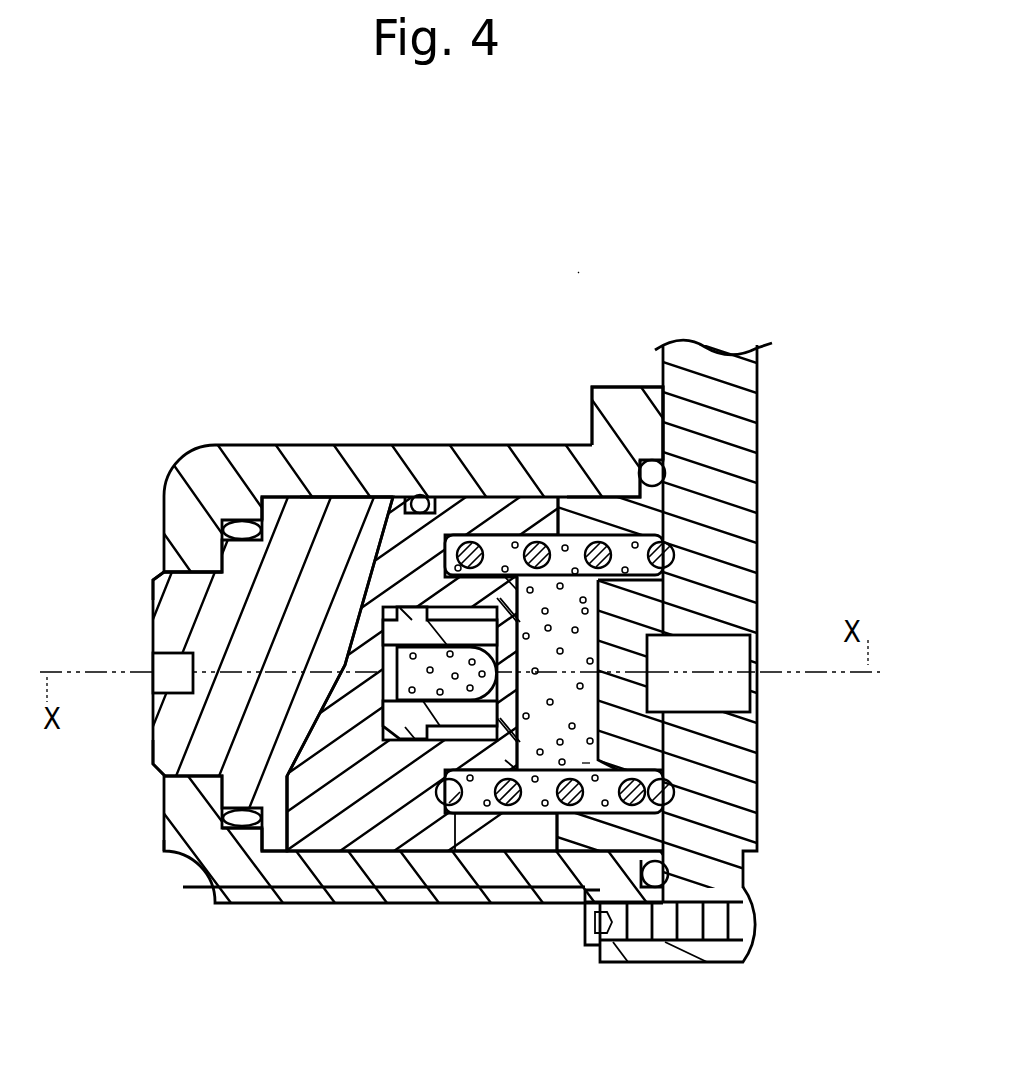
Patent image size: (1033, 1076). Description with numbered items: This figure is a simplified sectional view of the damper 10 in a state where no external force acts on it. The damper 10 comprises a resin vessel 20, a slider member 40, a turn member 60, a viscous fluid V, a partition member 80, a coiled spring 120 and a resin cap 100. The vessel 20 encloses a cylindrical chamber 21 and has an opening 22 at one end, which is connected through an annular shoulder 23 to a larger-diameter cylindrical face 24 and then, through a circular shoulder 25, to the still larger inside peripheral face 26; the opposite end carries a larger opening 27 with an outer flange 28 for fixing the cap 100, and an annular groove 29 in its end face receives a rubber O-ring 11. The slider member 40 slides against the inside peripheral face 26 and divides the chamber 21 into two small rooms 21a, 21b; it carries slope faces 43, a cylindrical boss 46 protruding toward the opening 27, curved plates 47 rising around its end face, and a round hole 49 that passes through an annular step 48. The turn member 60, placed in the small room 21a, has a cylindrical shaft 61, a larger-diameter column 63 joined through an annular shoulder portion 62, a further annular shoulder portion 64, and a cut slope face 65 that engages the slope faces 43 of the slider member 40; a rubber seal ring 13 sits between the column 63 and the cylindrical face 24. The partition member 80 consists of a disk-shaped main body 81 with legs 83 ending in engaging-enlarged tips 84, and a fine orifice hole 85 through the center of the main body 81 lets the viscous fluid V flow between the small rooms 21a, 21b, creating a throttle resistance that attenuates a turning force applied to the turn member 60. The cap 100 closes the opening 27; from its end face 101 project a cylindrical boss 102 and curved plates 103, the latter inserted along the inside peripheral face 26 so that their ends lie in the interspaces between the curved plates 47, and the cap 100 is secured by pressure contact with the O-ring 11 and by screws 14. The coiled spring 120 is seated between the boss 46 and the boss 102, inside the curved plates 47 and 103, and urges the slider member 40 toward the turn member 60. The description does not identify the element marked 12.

The damper 10 is at (571, 262).
The O-ring 11 is at (622, 393).
The inner body 12 is at (202, 605).
The seal ring 13 is at (224, 902).
The screws 14 is at (699, 924).
The resin vessel 20 is at (310, 430).
The cylindrical chamber 21 is at (509, 550).
The small room 21a is at (367, 415).
The small room 21b is at (579, 648).
The opening 22 is at (143, 594).
The annular shoulder 23 is at (158, 563).
The cylindrical face 24 is at (220, 465).
The circular shoulder 25 is at (255, 455).
The inside peripheral face 26 is at (301, 876).
The larger opening 27 is at (688, 503).
The flange 28 is at (642, 394).
The annular groove 29 is at (672, 934).
The slider member 40 is at (477, 722).
The slope face 43 is at (207, 691).
The cylindrical boss 46 is at (487, 874).
The curved plates 47 is at (519, 794).
The annular step 48 is at (427, 456).
The round hole 49 is at (470, 779).
The turn member 60 is at (330, 444).
The cylindrical shaft 61 is at (125, 758).
The annular shoulder portion 62 is at (177, 834).
The column 63 is at (165, 895).
The annular shoulder portion 64 is at (248, 889).
The slope face 65 is at (314, 890).
The partition member 80 is at (538, 722).
The disk-shaped main body 81 is at (532, 673).
The legs 83 is at (440, 779).
The engaging-enlarged tips 84 is at (424, 838).
The orifice hole 85 is at (480, 675).
The resin cap 100 is at (775, 372).
The end face 101 is at (632, 791).
The cylindrical boss 102 is at (727, 677).
The curved plates 103 is at (588, 887).
The coiled spring 120 is at (692, 633).
The viscous fluid V is at (692, 753).